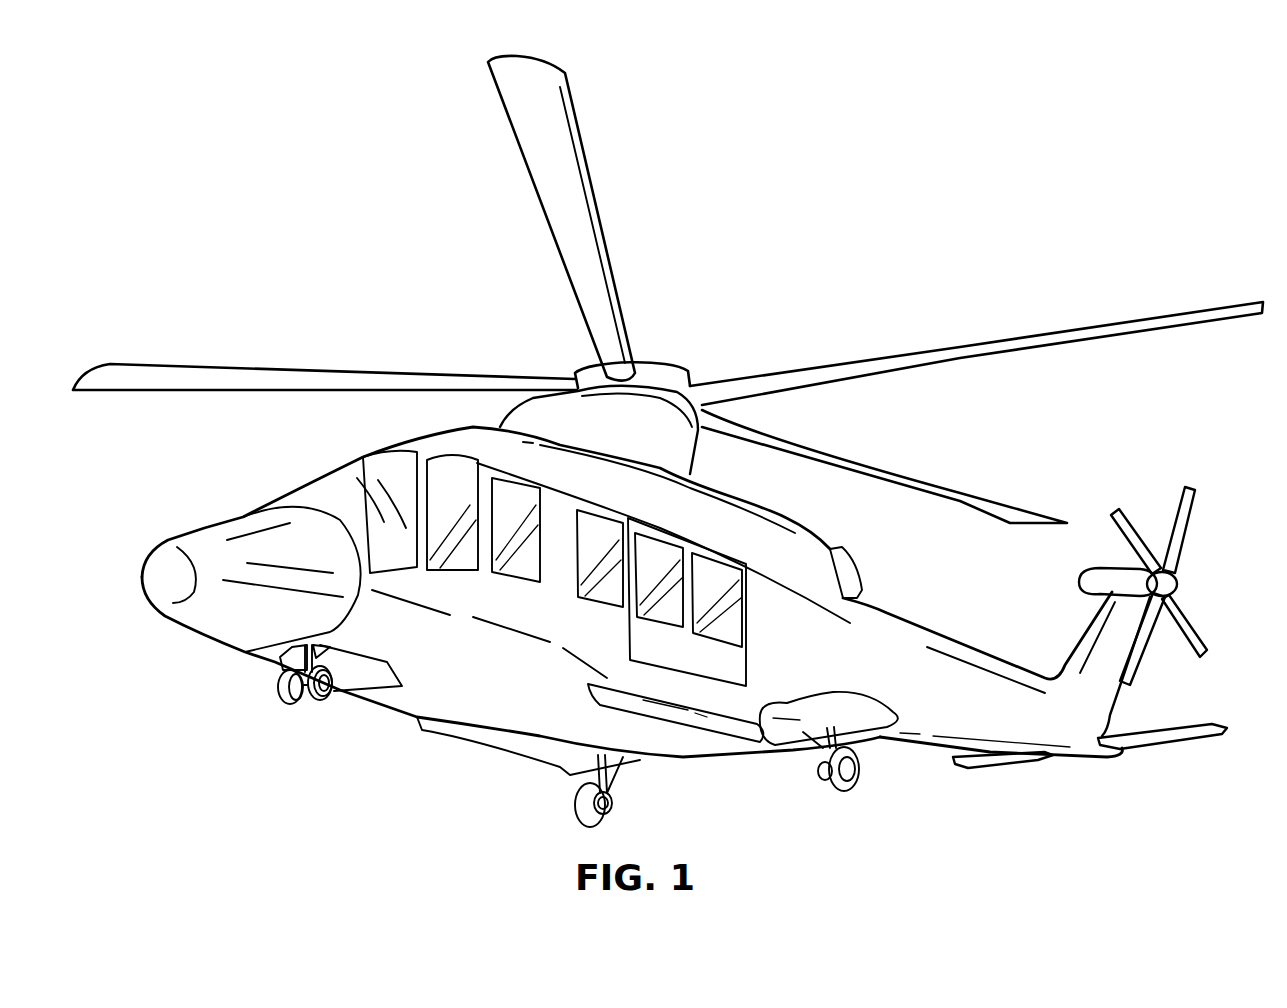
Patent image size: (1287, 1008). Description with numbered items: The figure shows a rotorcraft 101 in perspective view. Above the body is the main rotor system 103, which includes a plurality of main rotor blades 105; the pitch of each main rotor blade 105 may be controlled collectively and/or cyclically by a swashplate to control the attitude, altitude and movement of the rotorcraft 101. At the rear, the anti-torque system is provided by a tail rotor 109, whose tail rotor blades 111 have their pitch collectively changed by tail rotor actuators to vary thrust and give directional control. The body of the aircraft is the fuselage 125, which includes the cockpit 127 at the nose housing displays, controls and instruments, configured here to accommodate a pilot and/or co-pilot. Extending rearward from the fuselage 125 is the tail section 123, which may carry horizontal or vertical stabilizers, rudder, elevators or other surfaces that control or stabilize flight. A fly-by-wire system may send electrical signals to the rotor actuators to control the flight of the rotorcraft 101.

The rotorcraft 101 is at (925, 97).
The main rotor system 103 is at (690, 327).
The main rotor blade 105 is at (992, 342).
The tail rotor 109 is at (1163, 497).
The tail rotor blade 111 is at (1185, 530).
The tail section 123 is at (938, 636).
The fuselage 125 is at (415, 697).
The cockpit 127 is at (308, 476).